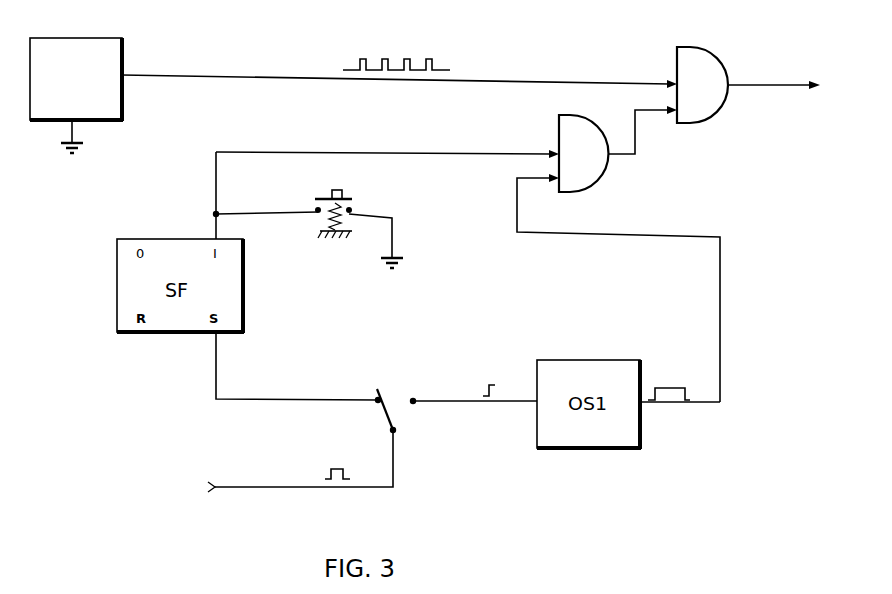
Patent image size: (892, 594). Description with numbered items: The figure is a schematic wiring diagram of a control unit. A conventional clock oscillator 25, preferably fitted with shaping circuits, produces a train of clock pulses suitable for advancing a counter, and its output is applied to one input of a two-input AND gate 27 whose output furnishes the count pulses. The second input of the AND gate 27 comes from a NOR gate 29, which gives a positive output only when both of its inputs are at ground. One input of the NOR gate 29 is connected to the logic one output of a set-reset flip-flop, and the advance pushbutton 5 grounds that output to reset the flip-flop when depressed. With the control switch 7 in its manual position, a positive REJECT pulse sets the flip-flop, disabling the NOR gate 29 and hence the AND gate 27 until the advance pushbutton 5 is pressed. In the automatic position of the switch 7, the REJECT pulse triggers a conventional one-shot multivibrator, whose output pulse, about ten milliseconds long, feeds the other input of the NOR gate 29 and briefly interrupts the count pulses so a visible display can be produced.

The clock oscillator 25 is at (95, 37).
The AND gate 27 is at (710, 48).
The NOR gate 29 is at (601, 186).
The advance pushbutton 5 is at (366, 206).
The control switch 7 is at (415, 420).